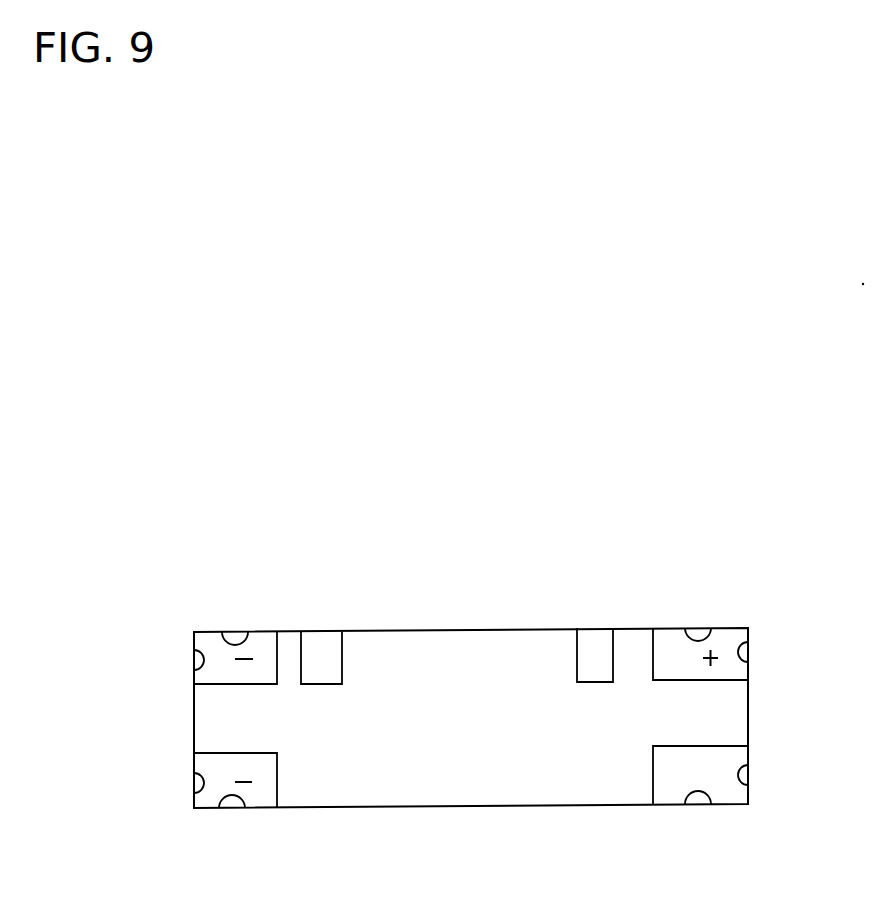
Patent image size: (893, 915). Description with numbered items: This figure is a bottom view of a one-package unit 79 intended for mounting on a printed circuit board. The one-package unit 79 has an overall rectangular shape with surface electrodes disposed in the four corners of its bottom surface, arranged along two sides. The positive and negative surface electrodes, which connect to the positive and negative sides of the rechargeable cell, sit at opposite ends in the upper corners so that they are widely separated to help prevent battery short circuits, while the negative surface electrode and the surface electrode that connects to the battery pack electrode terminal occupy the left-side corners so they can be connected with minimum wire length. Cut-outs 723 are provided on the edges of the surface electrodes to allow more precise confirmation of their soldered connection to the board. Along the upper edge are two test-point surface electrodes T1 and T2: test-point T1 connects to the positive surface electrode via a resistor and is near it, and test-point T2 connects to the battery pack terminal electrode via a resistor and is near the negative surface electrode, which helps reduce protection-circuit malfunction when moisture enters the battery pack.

The one-package unit 79 is at (510, 612).
The cut-outs 723 is at (698, 626).
The test-point surface electrode T1 is at (595, 655).
The test-point surface electrode T2 is at (321, 658).